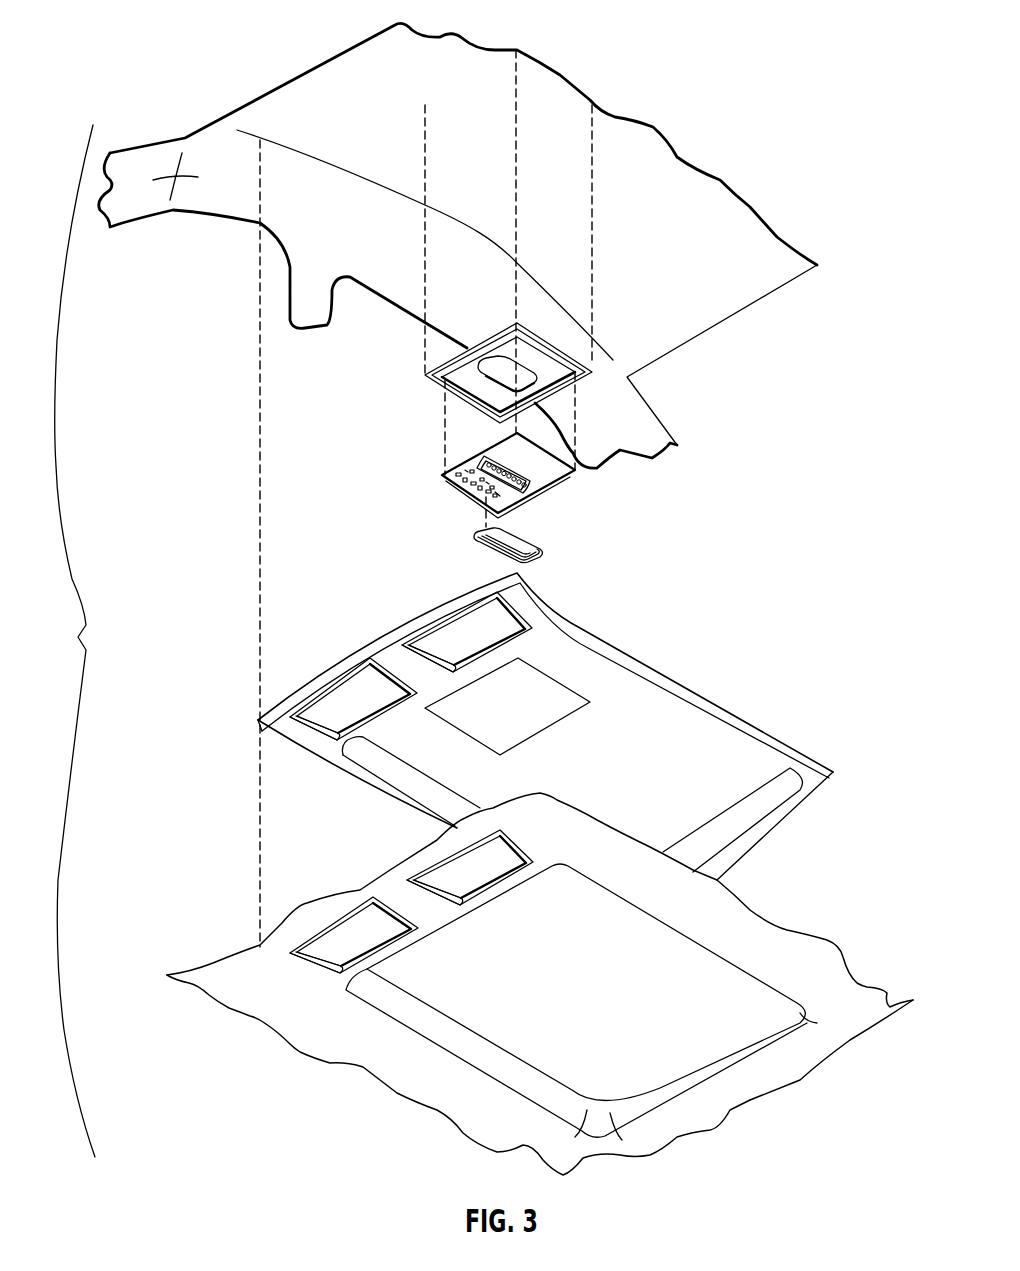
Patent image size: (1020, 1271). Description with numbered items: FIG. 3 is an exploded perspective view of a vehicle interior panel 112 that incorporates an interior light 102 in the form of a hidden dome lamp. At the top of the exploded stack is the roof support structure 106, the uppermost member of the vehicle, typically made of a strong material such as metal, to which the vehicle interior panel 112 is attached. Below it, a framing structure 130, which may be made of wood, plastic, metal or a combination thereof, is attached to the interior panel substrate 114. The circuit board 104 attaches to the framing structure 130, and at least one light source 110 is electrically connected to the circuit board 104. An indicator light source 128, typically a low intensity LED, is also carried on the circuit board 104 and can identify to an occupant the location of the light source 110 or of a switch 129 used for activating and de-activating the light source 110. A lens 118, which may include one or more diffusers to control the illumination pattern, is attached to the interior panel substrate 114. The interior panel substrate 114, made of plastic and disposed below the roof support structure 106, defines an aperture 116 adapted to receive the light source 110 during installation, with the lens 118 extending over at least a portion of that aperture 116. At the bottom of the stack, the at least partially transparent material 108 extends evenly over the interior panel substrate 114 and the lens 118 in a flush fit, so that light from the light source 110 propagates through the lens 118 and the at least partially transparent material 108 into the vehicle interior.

The interior light 102 is at (550, 507).
The circuit board 104 is at (562, 470).
The roof support structure 106 is at (742, 290).
The at least partially transparent material 108 is at (843, 1013).
The light source 110 is at (535, 473).
The vehicle interior panel 112 is at (73, 641).
The interior panel substrate 114 is at (546, 726).
The aperture 116 is at (547, 728).
The lens 118 is at (523, 555).
The indicator light source 128 is at (470, 487).
The switch 129 is at (497, 496).
The framing structure 130 is at (430, 383).